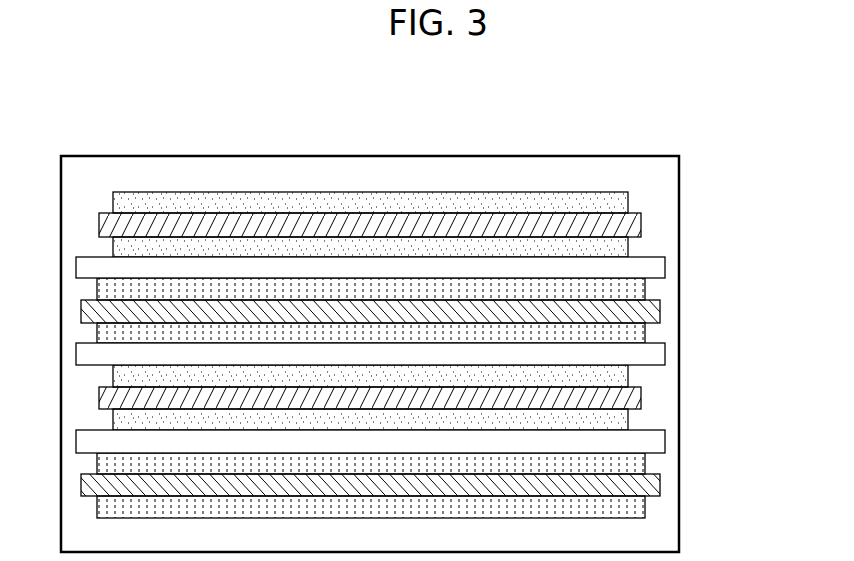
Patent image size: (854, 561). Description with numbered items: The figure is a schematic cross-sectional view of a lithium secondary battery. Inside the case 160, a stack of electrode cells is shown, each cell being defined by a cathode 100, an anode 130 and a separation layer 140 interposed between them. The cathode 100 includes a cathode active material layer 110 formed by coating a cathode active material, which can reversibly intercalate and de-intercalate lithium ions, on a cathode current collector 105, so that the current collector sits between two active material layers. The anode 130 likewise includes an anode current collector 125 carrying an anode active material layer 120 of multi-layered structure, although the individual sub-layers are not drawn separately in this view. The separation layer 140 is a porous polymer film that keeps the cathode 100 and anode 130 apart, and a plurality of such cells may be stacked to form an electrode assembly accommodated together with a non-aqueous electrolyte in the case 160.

The cathode 100 is at (455, 311).
The cathode current collector 105 is at (642, 223).
The cathode active material layer 110 is at (621, 203).
The anode active material layer 120 is at (639, 289).
The anode current collector 125 is at (656, 311).
The anode 130 is at (446, 398).
The separation layer 140 is at (550, 265).
The case 160 is at (680, 484).